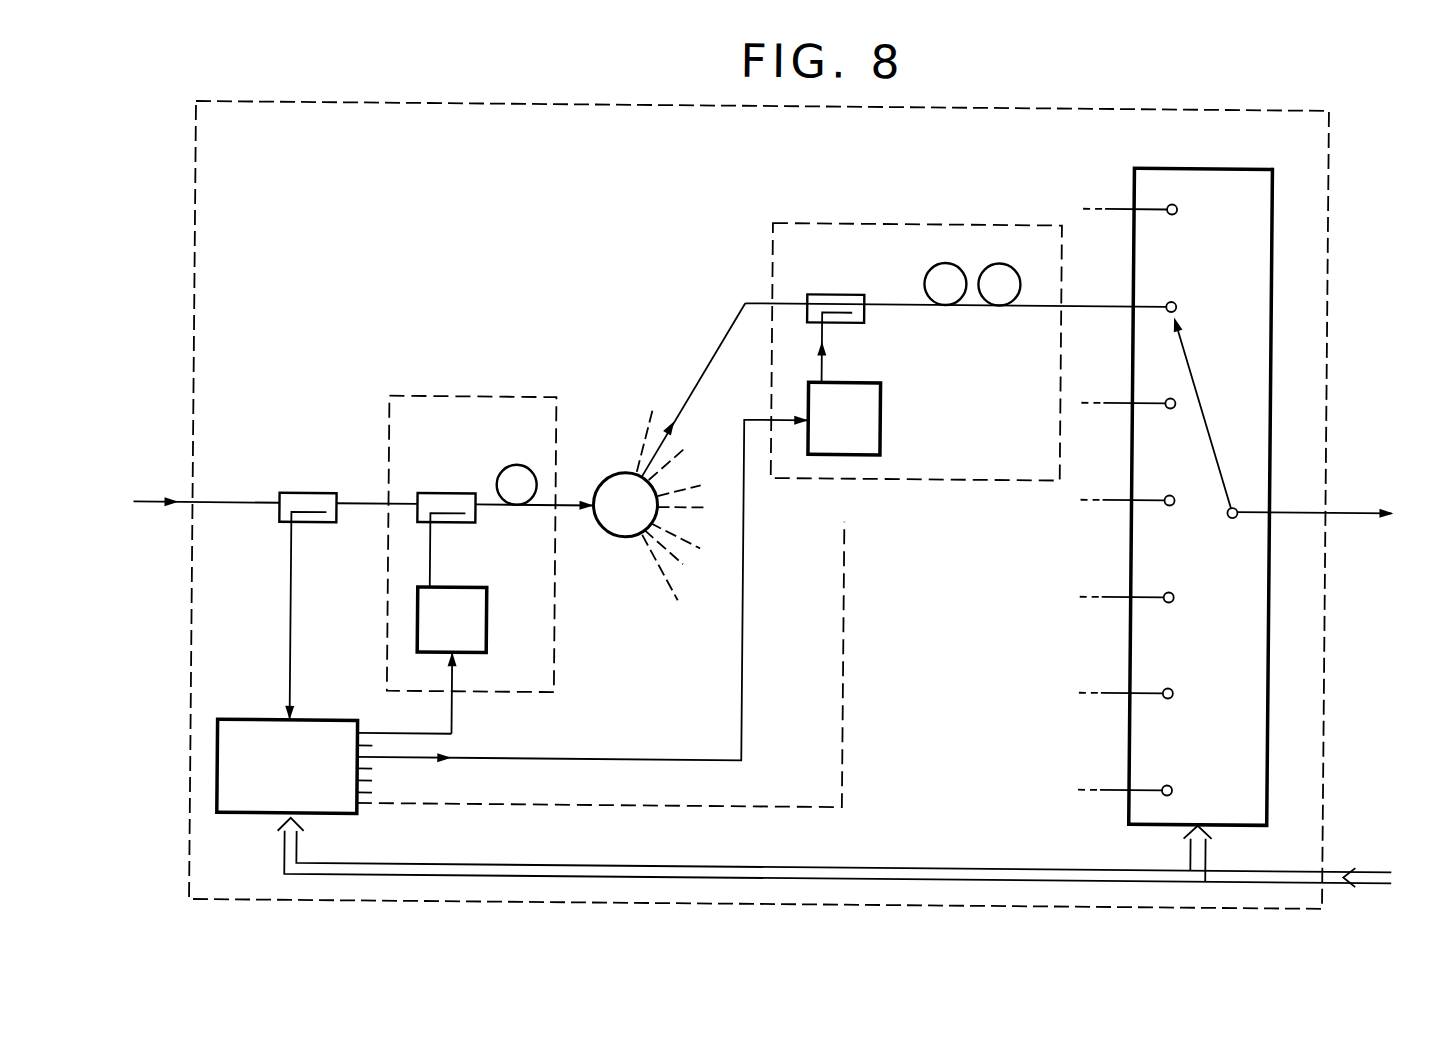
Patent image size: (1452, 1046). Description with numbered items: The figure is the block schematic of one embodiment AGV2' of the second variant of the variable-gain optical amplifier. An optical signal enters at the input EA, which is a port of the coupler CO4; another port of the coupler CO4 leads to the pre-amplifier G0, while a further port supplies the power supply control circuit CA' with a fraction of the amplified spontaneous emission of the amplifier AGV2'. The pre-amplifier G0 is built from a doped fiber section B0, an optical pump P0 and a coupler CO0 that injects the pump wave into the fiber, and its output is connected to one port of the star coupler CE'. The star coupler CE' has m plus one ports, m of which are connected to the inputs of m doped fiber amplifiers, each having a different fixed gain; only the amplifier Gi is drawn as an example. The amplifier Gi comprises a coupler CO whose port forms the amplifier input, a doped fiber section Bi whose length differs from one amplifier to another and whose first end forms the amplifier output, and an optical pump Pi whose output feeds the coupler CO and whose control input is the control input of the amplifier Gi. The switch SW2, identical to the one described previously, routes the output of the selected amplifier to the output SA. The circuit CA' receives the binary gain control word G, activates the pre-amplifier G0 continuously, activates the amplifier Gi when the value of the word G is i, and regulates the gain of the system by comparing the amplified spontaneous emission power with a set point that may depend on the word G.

The amplifier AGV2' is at (777, 475).
The input EA is at (153, 497).
The output SA is at (1374, 497).
The coupler CO4 is at (307, 496).
The pre-amplifier G0 is at (469, 402).
The coupler CO0 is at (437, 495).
The fiber section B0 is at (518, 474).
The optical pump P0 is at (477, 616).
The star coupler CE' is at (660, 451).
The doped fiber amplifier Gi is at (946, 228).
The coupler CO is at (835, 294).
The doped fiber section Bi is at (1002, 271).
The optical pump Pi is at (870, 414).
The switch SW2 is at (1223, 176).
The power supply control circuit CA' is at (531, 616).
The binary gain control word G is at (859, 860).